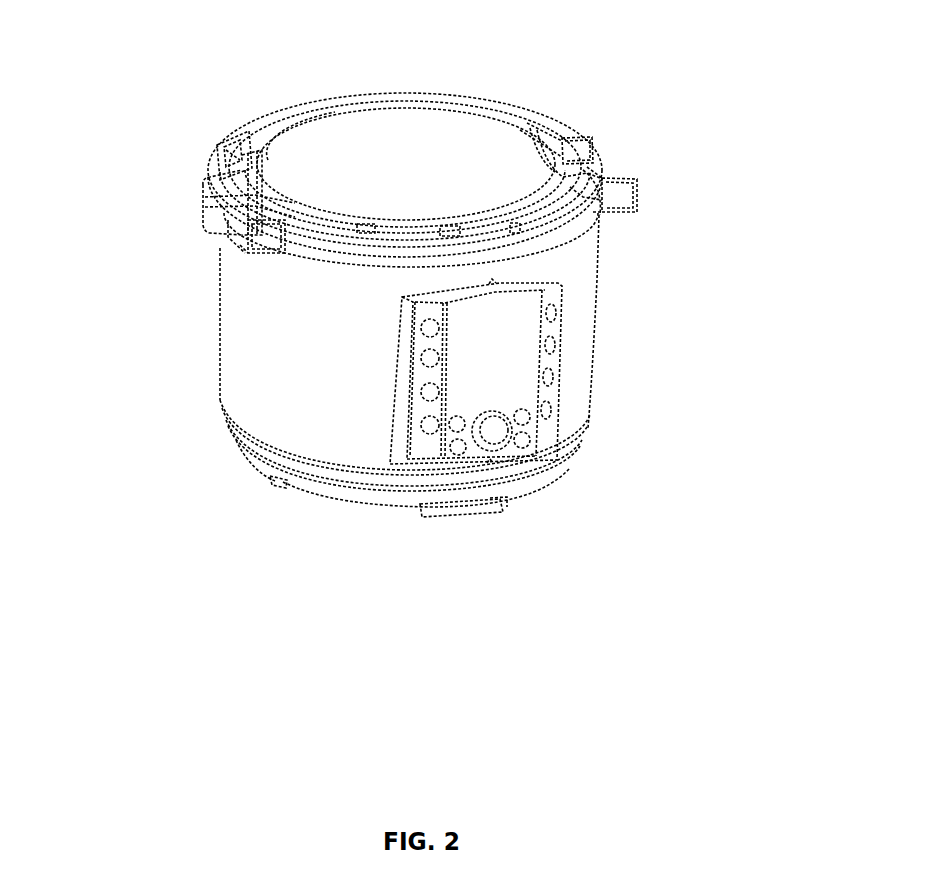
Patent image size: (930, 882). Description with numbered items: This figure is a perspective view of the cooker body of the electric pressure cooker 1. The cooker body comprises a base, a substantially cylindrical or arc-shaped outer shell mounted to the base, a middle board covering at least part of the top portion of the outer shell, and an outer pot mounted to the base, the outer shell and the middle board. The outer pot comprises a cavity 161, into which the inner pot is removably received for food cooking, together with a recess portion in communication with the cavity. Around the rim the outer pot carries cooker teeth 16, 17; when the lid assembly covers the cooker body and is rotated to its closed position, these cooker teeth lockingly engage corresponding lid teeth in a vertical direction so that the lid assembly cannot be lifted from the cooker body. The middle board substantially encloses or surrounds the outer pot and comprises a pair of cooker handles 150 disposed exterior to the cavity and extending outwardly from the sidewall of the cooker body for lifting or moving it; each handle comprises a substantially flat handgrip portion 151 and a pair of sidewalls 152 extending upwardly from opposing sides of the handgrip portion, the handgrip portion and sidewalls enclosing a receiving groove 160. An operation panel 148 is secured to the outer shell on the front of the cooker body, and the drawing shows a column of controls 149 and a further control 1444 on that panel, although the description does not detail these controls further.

The cooking appliance 1 is at (267, 392).
The first locking tab 16 is at (577, 203).
The second locking tab 17 is at (557, 133).
The control panel 148 is at (520, 382).
The control buttons 149 is at (422, 444).
The hinge base 150 is at (230, 247).
The hinge bracket upper part 151 is at (220, 192).
The hinge bracket lower part 152 is at (233, 213).
The locking member 160 is at (280, 197).
The opening 161 is at (403, 133).
The button 1444 is at (522, 440).